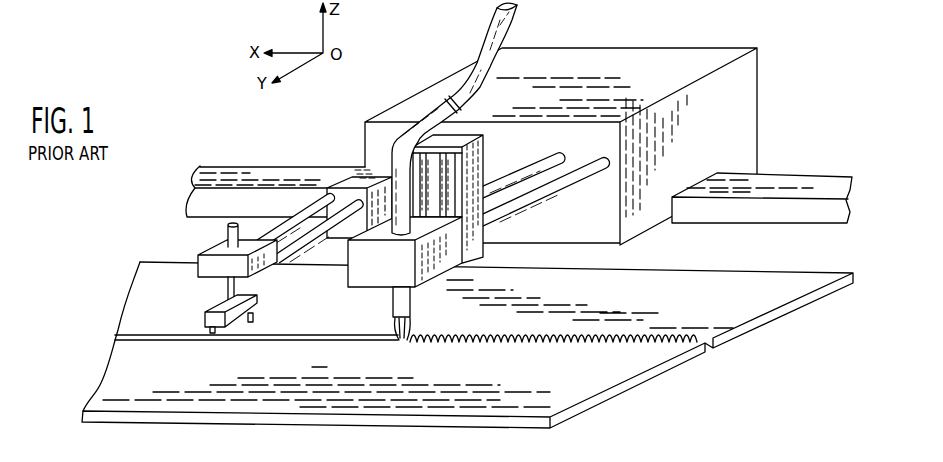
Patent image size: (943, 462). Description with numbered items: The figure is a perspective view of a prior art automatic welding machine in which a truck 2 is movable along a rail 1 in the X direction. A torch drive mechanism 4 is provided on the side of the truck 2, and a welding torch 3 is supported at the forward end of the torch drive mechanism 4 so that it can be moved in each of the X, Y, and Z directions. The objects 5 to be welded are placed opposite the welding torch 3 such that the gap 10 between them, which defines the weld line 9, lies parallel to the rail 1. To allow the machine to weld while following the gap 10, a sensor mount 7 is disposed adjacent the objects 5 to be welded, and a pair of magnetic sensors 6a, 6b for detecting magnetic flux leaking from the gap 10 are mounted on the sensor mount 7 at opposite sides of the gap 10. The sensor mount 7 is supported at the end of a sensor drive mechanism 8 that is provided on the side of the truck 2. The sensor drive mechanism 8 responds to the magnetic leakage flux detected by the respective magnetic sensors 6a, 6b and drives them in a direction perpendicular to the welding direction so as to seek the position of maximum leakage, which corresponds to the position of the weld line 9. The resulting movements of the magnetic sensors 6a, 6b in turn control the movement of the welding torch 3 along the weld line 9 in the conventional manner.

The rail 1 is at (772, 178).
The truck 2 is at (700, 52).
The welding torch 3 is at (410, 302).
The torch drive mechanism 4 is at (547, 188).
The objects to be welded 5 is at (752, 312).
The magnetic sensor 6a is at (213, 334).
The magnetic sensor 6b is at (255, 320).
The sensor mount 7 is at (258, 302).
The sensor drive mechanism 8 is at (350, 182).
The weld line 9 is at (586, 336).
The gap 10 is at (312, 343).